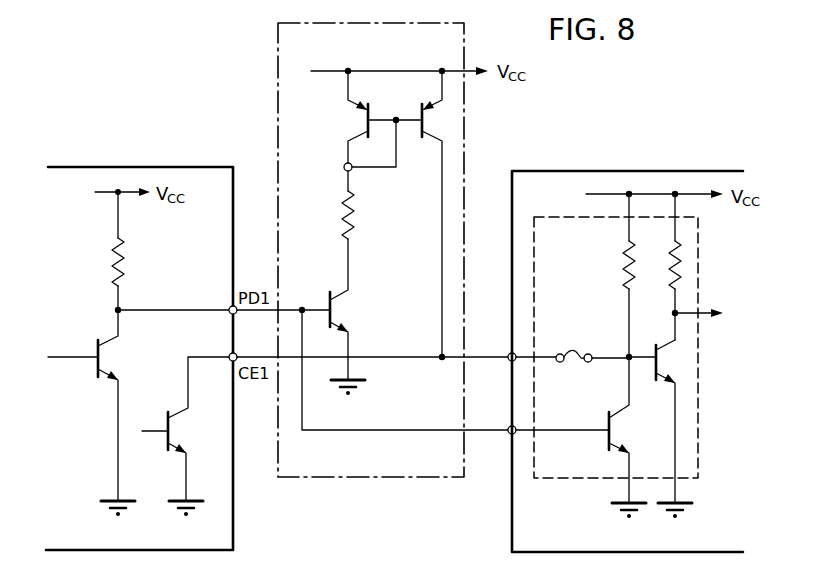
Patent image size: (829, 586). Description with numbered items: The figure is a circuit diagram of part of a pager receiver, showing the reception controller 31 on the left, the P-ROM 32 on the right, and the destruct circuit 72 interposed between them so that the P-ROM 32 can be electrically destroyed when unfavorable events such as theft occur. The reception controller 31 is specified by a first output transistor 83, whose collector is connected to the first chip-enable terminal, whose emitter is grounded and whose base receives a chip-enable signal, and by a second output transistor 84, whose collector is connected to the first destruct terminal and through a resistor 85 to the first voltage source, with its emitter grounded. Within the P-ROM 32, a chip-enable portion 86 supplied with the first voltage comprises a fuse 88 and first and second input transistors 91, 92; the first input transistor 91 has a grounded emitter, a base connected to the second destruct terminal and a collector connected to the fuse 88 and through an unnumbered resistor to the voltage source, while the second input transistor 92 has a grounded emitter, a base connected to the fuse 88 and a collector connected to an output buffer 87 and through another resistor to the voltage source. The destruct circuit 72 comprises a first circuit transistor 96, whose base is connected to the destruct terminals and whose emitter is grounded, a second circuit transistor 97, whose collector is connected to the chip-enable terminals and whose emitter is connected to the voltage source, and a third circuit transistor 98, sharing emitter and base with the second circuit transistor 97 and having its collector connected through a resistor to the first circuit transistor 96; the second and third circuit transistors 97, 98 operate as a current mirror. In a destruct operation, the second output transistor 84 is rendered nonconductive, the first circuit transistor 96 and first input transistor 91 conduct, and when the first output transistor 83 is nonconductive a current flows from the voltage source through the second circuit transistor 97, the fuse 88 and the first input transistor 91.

The reception controller 31 is at (128, 166).
The P-ROM 32 is at (626, 171).
The destruct circuit 72 is at (276, 75).
The first output transistor 83 is at (178, 433).
The second output transistor 84 is at (108, 362).
The resistor 85 is at (125, 270).
The chip-enable portion 86 is at (698, 438).
The output buffer 87 is at (726, 324).
The fuse 88 is at (577, 350).
The first input transistor 91 is at (622, 437).
The second input transistor 92 is at (668, 369).
The first circuit transistor 96 is at (340, 312).
The second circuit transistor 97 is at (427, 118).
The third circuit transistor 98 is at (364, 119).